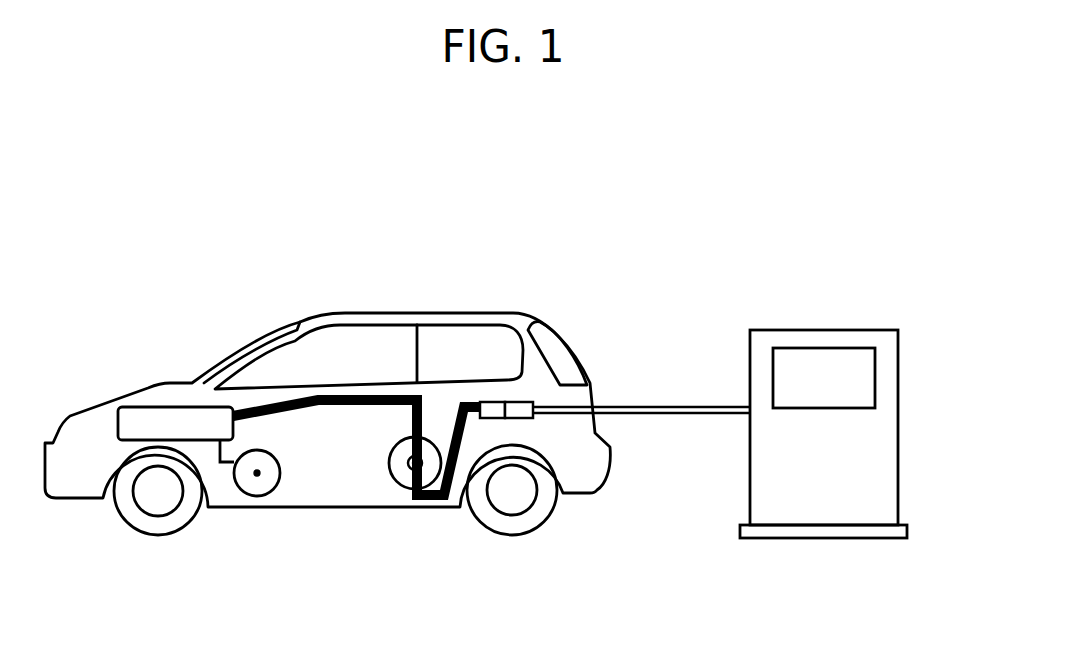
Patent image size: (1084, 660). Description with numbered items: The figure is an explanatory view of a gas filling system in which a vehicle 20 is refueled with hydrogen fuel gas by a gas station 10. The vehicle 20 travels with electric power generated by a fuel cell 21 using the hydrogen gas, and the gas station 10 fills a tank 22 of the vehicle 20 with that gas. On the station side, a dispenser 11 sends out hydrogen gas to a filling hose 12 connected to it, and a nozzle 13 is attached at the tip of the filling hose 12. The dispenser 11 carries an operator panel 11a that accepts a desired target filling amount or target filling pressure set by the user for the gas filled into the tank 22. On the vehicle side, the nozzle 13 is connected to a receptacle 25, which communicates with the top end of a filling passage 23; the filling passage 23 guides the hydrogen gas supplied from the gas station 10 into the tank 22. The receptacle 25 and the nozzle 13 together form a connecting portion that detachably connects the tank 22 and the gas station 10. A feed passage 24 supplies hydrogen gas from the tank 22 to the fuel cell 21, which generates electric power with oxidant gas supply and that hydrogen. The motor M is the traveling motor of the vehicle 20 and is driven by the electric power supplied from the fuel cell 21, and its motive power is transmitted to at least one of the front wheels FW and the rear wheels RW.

The gas station 10 is at (851, 375).
The dispenser 11 is at (898, 458).
The operator panel 11a is at (877, 373).
The filling hose 12 is at (693, 406).
The nozzle 13 is at (523, 400).
The vehicle 20 is at (505, 203).
The fuel cell 21 is at (145, 407).
The tank 22 is at (403, 489).
The filling passage 23 is at (458, 403).
The feed passage 24 is at (358, 395).
The receptacle 25 is at (497, 400).
The motor M is at (257, 496).
The front wheels FW is at (158, 537).
The rear wheels RW is at (512, 537).